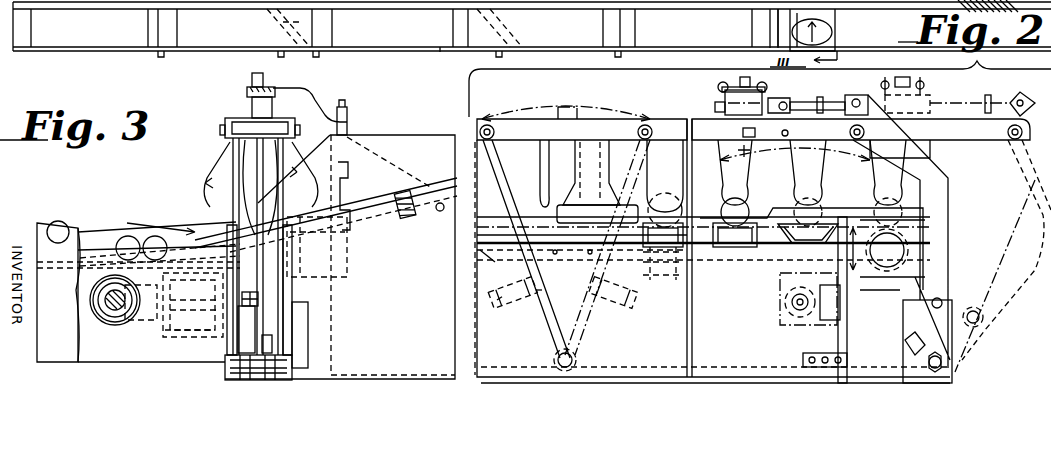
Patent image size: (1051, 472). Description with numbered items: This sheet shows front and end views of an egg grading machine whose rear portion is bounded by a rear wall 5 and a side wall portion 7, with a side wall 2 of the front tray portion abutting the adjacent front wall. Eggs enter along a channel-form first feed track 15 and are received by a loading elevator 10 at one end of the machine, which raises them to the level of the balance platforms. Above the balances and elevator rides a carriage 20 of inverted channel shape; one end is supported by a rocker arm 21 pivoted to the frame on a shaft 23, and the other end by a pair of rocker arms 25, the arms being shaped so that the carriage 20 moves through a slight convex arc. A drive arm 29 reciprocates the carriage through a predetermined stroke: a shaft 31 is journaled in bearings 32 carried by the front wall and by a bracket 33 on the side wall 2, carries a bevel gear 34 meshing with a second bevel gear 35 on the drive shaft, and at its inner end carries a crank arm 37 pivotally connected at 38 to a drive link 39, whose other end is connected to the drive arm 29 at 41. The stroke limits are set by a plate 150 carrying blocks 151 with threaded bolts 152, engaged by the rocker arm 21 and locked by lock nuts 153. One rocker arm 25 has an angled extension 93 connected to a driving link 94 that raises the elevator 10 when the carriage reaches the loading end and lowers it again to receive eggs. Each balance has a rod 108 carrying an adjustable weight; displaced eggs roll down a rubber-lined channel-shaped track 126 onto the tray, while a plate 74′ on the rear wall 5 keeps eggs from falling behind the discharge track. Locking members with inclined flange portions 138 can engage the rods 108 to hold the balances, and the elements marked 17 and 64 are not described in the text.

In FIG. 2, the side wall 2 is at (849, 289).
In FIG. 3, the side wall 2 is at (37, 345).
In FIG. 3, the rear wall 5 is at (333, 320).
In FIG. 3, the side wall portion 7 is at (390, 137).
In FIG. 2, the loading elevator 10 is at (912, 243).
In FIG. 2, the first feed track 15 is at (836, 36).
In FIG. 3, the first feed track 15 is at (95, 232).
In FIG. 2, the section marker 17 is at (456, 73).
In FIG. 2, the carriage 20 is at (664, 119).
In FIG. 2, the rocker arm 21 is at (527, 200).
In FIG. 2, the shaft 23 is at (575, 358).
In FIG. 2, the rocker arms 25 is at (949, 212).
In FIG. 3, the rocker arms 25 is at (278, 343).
In FIG. 2, the drive arm 29 is at (1030, 158).
In FIG. 3, the shaft 31 is at (193, 305).
In FIG. 3, the bearings 32 is at (172, 331).
In FIG. 3, the bracket 33 is at (195, 312).
In FIG. 3, the bevel gear 34 is at (135, 322).
In FIG. 3, the second bevel gear 35 is at (112, 322).
In FIG. 2, the crank arm 37 is at (765, 312).
In FIG. 2, the pivotal connection 38 is at (778, 302).
In FIG. 2, the drive link 39 is at (937, 300).
In FIG. 2, the pivotal connection 41 is at (982, 318).
In FIG. 2, the gripper finger 64 is at (580, 173).
In FIG. 2, the plate 74′ is at (597, 217).
In FIG. 2, the extension 93 is at (932, 347).
In FIG. 2, the driving link 94 is at (850, 338).
In FIG. 3, the rod 108 is at (378, 224).
In FIG. 2, the channel-shaped track 126 is at (665, 262).
In FIG. 3, the inclined flange portions 138 is at (365, 215).
In FIG. 2, the plate 150 is at (538, 300).
In FIG. 2, the blocks 151 is at (518, 287).
In FIG. 2, the bolts 152 is at (603, 295).
In FIG. 2, the lock nuts 153 is at (503, 303).